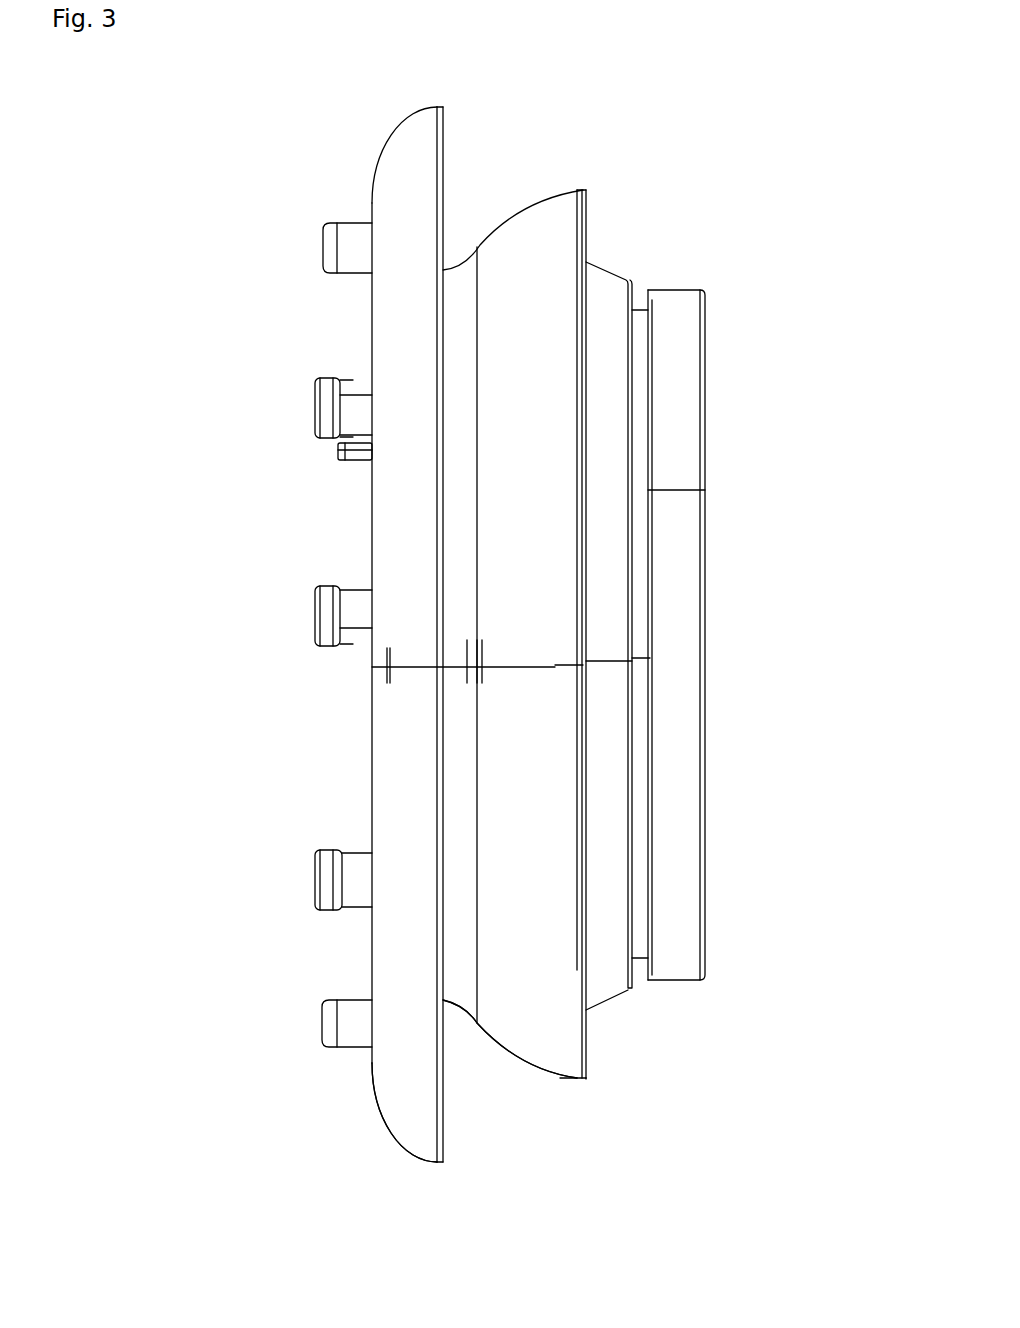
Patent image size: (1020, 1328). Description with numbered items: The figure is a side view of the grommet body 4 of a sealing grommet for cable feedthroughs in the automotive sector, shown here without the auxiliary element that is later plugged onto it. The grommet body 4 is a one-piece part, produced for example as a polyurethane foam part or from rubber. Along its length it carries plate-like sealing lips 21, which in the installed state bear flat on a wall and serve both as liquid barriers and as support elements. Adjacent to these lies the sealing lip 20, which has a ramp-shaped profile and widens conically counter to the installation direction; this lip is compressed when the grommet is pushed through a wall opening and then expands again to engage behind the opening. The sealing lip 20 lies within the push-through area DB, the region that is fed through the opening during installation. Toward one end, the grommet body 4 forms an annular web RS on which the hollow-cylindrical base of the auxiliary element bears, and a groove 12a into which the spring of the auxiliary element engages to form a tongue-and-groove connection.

The grommet body 4 is at (244, 227).
The plate-like sealing lip 21 is at (567, 1081).
The sealing lip 20 is at (598, 259).
The groove 12a is at (645, 298).
The annular web RS is at (685, 289).
The push-through area DB is at (720, 1115).